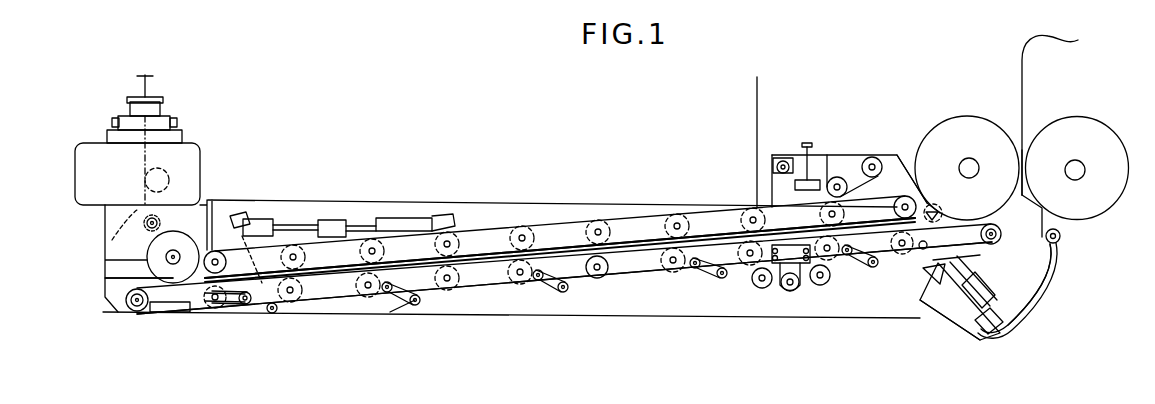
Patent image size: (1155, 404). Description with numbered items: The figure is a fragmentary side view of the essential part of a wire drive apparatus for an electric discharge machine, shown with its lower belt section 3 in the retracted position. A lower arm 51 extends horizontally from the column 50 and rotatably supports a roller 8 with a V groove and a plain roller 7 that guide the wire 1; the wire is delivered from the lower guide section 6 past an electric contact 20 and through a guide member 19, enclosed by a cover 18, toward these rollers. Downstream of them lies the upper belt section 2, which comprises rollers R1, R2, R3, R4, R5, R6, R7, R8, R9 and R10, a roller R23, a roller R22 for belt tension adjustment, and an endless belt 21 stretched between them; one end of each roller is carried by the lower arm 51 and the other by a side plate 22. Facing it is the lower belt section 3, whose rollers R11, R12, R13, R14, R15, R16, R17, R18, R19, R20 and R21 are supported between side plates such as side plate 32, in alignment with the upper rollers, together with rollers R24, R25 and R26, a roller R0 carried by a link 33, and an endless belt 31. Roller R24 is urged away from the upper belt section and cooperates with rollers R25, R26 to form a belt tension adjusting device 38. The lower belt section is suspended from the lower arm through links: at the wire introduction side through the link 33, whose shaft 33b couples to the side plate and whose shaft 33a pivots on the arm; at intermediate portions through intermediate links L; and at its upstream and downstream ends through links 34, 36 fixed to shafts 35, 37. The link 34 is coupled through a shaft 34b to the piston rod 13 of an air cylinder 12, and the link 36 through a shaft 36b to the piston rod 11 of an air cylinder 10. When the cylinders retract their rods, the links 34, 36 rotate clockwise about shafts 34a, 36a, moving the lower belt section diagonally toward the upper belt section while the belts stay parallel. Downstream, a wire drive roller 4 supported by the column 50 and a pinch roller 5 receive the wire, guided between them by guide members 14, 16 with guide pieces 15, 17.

The wire 1 is at (150, 93).
The upper belt section 2 is at (500, 225).
The lower belt section 3 is at (351, 318).
The wire drive roller 4 is at (963, 124).
The pinch roller 5 is at (1086, 119).
The lower guide section 6 is at (163, 122).
The plain roller 7 is at (172, 228).
The roller with V groove 8 is at (160, 213).
The air cylinder 10 is at (958, 328).
The piston rod 11 is at (1027, 292).
The air cylinder 12 is at (383, 212).
The piston rod 13 is at (305, 216).
The guide member 14 is at (937, 197).
The guide piece 15 is at (935, 219).
The guide member 16 is at (1070, 232).
The guide piece 17 is at (1034, 190).
The cover 18 is at (104, 225).
The guide member 19 is at (112, 240).
The electric contact 20 is at (172, 172).
The endless belt 21 is at (576, 222).
The side plate 22 is at (650, 228).
The endless belt 31 is at (156, 313).
The side plate 32 is at (490, 285).
The link 33 is at (150, 314).
The shaft 33a is at (222, 309).
The shaft 33b is at (115, 279).
The link 34 is at (270, 312).
The shaft 34a is at (280, 315).
The shaft 34b is at (243, 222).
The shaft 35 is at (245, 306).
The link 36 is at (938, 318).
The shaft 36a is at (1000, 333).
The shaft 36b is at (1045, 291).
The shaft 37 is at (921, 286).
The belt tension adjusting device 38 is at (774, 268).
The column 50 is at (757, 112).
The lower arm 51 is at (442, 208).
The intermediate links L is at (415, 305).
The roller R0 is at (136, 312).
The roller R1 is at (218, 248).
The roller R2 is at (300, 245).
The roller R3 is at (376, 238).
The roller R4 is at (449, 232).
The roller R5 is at (524, 226).
The roller R6 is at (600, 220).
The roller R7 is at (677, 214).
The roller R8 is at (752, 208).
The roller R9 is at (797, 178).
The roller R10 is at (900, 185).
The roller R11 is at (212, 309).
The roller R12 is at (298, 300).
The roller R13 is at (372, 296).
The roller R14 is at (455, 292).
The roller R15 is at (522, 290).
The roller R16 is at (600, 280).
The roller R17 is at (671, 270).
The roller R18 is at (750, 265).
The roller R19 is at (848, 290).
The roller R20 is at (876, 258).
The roller R21 is at (1048, 258).
The roller for belt tension adjustment R22 is at (872, 157).
The roller R23 is at (837, 177).
The roller R24 is at (792, 293).
The roller R25 is at (763, 290).
The roller R26 is at (820, 287).